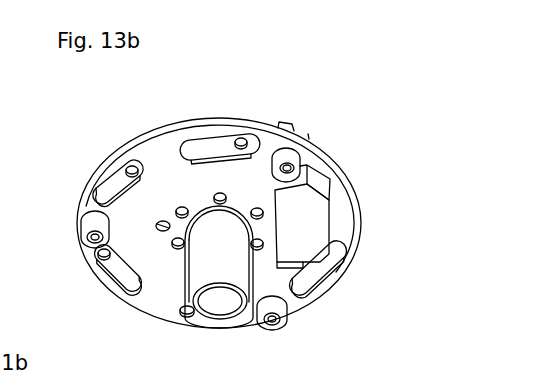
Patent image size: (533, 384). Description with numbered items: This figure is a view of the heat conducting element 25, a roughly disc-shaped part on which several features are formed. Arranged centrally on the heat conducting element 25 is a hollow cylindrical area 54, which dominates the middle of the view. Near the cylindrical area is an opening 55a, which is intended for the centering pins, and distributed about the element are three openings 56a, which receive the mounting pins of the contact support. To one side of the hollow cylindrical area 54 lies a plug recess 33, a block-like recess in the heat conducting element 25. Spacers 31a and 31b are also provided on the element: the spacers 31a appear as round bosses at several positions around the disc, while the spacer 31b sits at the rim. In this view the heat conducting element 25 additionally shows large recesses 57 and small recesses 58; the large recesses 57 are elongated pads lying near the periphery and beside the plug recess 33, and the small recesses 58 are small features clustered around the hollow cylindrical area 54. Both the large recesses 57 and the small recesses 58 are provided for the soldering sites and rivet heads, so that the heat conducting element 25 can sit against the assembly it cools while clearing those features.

The heat conducting element 25 is at (349, 180).
The spacer 31a is at (294, 160).
The spacer 31b is at (292, 126).
The plug recess 33 is at (310, 228).
The hollow cylindrical area 54 is at (220, 262).
The opening 55a is at (156, 224).
The openings 56a is at (243, 147).
The large recesses 57 is at (217, 143).
The small recesses 58 is at (215, 191).